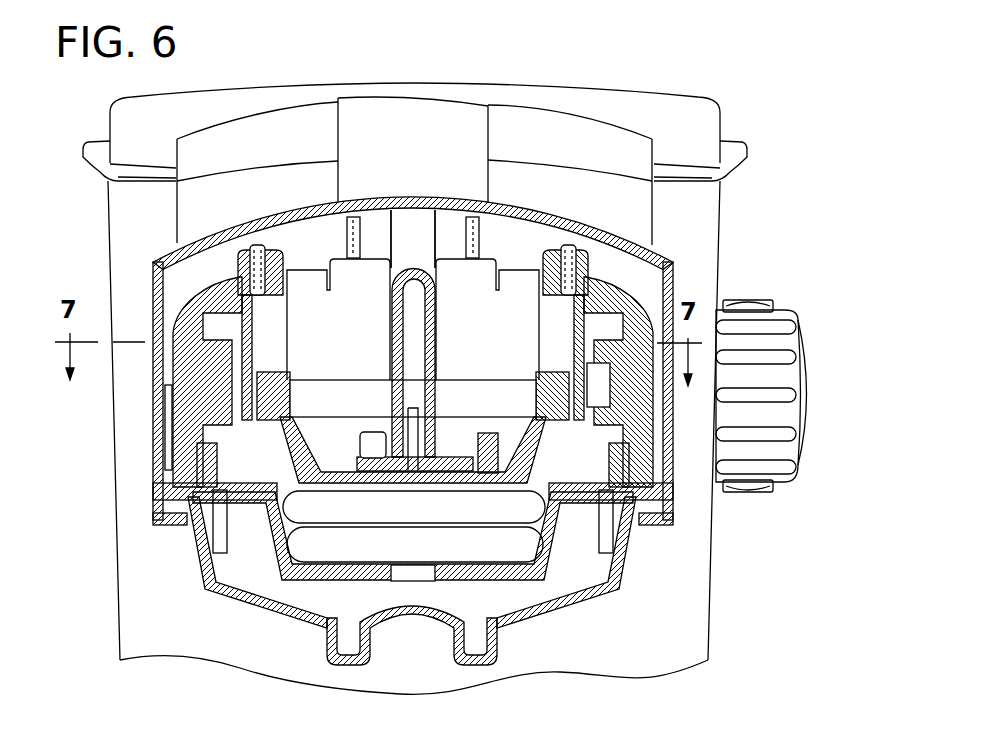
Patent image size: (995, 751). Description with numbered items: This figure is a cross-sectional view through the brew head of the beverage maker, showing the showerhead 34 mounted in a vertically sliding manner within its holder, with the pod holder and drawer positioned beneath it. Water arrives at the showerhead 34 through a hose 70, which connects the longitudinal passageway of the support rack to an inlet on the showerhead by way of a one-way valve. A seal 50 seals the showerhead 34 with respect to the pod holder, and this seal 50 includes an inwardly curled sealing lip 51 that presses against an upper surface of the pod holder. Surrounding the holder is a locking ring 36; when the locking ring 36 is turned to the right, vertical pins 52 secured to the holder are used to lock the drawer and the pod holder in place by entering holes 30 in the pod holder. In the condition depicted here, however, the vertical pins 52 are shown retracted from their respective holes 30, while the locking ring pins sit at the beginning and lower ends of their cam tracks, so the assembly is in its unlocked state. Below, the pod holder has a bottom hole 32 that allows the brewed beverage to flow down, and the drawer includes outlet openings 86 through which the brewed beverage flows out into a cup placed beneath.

The hose 70 is at (423, 243).
The locking ring 36 is at (164, 384).
The vertical pins 52 is at (156, 420).
The seal 50 is at (154, 458).
The holes 30 is at (154, 488).
The showerhead 34 is at (538, 458).
The bottom hole 32 is at (413, 579).
The sealing lip 51 is at (202, 572).
The outlet openings 86 is at (349, 655).